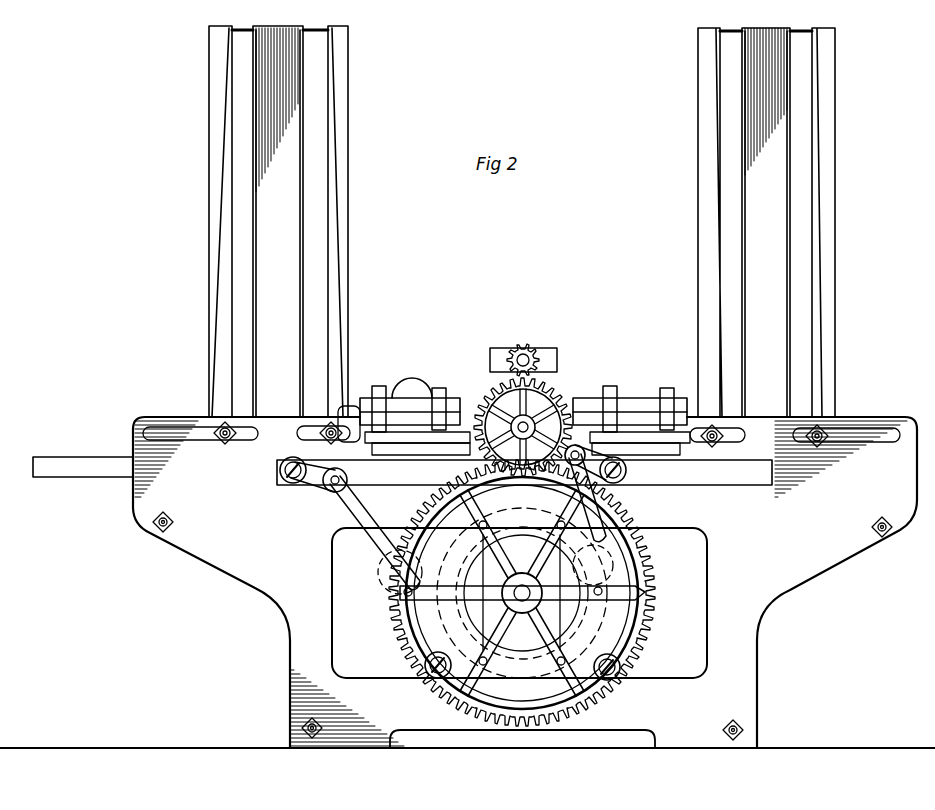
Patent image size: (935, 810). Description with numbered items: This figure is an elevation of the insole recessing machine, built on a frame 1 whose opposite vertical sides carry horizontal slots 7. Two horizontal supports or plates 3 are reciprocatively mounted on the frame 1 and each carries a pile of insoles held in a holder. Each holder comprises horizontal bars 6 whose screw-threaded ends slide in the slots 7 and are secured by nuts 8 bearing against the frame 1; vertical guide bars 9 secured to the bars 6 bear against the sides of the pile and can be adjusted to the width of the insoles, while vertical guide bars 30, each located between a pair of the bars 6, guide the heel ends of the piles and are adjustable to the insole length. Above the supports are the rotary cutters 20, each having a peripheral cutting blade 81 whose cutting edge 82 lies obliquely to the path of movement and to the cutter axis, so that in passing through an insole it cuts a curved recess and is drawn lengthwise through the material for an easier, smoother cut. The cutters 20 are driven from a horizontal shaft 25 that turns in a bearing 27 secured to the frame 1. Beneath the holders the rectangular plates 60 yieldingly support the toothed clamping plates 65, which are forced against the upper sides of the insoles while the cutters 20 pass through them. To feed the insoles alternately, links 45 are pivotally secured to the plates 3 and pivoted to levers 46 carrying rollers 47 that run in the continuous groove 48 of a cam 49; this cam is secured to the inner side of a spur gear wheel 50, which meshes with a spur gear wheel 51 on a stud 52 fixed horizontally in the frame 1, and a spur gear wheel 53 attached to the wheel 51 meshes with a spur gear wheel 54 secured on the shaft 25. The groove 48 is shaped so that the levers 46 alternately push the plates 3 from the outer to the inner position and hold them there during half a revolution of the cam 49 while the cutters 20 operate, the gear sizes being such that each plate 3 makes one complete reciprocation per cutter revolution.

The frame 1 is at (230, 561).
The horizontal plate 3 is at (90, 462).
The horizontal bar 6 is at (228, 444).
The horizontal slot 7 is at (190, 440).
The nut 8 is at (221, 440).
The vertical guide bar 9 is at (222, 238).
The rotary cutter 20 is at (402, 400).
The horizontal shaft 25 is at (513, 354).
The bearing 27 is at (547, 353).
The vertical guide bar 30 is at (265, 318).
The link 45 is at (305, 486).
The lever 46 is at (355, 522).
The roller 47 is at (408, 572).
The continuous groove 48 is at (516, 677).
The cam 49 is at (424, 665).
The spur gear wheel 50 is at (655, 624).
The spur gear wheel 51 is at (526, 475).
The stud 52 is at (547, 406).
The spur gear wheel 53 is at (492, 390).
The spur gear wheel 54 is at (521, 344).
The rectangular plate 60 is at (526, 457).
The clamping plate 65 is at (538, 462).
The peripheral cutting blade 81 is at (380, 392).
The cutting edge 82 is at (424, 384).